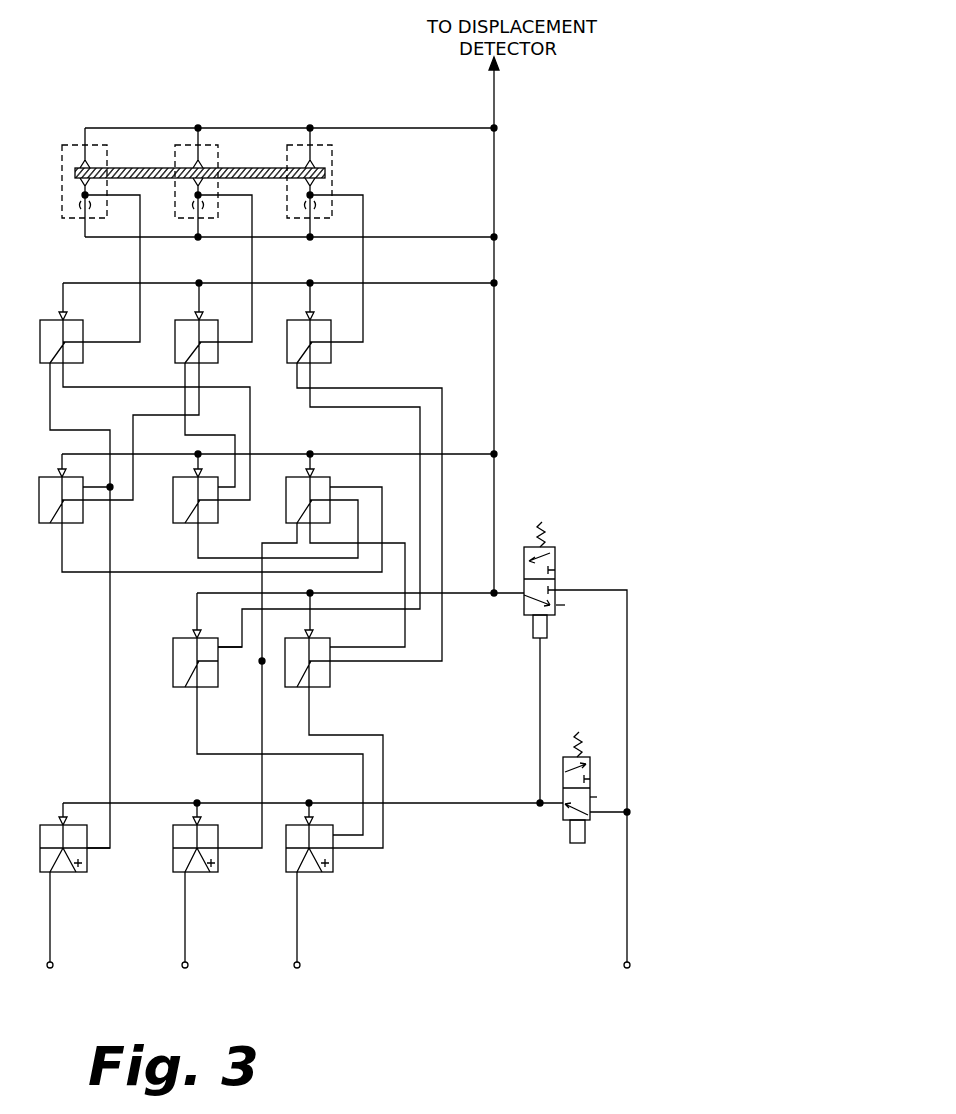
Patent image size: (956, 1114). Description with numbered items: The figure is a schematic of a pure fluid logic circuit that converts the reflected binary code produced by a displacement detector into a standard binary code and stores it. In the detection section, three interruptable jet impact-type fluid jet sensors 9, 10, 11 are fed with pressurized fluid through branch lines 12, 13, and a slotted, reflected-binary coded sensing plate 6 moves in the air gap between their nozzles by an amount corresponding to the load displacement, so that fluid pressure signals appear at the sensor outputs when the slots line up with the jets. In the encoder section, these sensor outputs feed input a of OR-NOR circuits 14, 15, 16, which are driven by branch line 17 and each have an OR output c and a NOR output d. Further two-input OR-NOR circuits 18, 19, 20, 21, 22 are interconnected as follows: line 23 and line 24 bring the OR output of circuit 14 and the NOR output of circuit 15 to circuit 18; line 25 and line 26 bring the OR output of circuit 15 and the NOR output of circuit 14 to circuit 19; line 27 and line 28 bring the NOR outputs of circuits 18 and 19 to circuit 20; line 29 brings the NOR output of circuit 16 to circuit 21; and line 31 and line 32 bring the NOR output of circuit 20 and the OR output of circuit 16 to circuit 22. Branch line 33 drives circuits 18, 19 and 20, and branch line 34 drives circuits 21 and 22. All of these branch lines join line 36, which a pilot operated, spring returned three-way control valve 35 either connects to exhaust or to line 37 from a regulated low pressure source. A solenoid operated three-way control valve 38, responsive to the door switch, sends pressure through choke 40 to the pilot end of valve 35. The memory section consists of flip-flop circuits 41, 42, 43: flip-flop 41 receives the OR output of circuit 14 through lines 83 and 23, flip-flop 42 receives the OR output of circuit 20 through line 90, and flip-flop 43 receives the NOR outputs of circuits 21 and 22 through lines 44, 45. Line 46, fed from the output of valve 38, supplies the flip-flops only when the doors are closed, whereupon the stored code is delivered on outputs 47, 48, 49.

The sensing plate 6 is at (326, 173).
The fluid jet sensor 9 is at (68, 150).
The fluid jet sensor 10 is at (180, 150).
The fluid jet sensor 11 is at (292, 150).
The branch line 12 is at (428, 128).
The branch line 13 is at (428, 237).
The branch line 17 is at (432, 283).
The OR-NOR circuit 14 is at (40, 329).
The OR-NOR circuit 15 is at (175, 329).
The OR-NOR circuit 16 is at (287, 329).
The OR-NOR circuit 18 is at (39, 484).
The OR-NOR circuit 19 is at (173, 484).
The OR-NOR circuit 20 is at (286, 484).
The OR-NOR circuit 21 is at (173, 646).
The OR-NOR circuit 22 is at (285, 646).
The line 23 is at (78, 430).
The line 24 is at (158, 416).
The line 25 is at (222, 435).
The line 26 is at (126, 387).
The line 27 is at (145, 572).
The line 28 is at (240, 558).
The line 29 is at (352, 407).
The line 31 is at (397, 543).
The line 32 is at (387, 388).
The branch line 33 is at (462, 454).
The branch line 34 is at (468, 593).
The three-way control valve 35 is at (552, 547).
The line 36 is at (495, 333).
The line 37 is at (627, 870).
The three-way control valve 38 is at (588, 757).
The choke 40 is at (538, 680).
The flip-flop circuit 41 is at (40, 834).
The flip-flop circuit 42 is at (173, 834).
The flip-flop circuit 43 is at (290, 830).
The line 44 is at (197, 737).
The line 45 is at (350, 735).
The line 46 is at (468, 803).
The output 47 is at (50, 913).
The output 48 is at (185, 913).
The output 49 is at (297, 913).
The line 83 is at (110, 680).
The line 90 is at (262, 778).